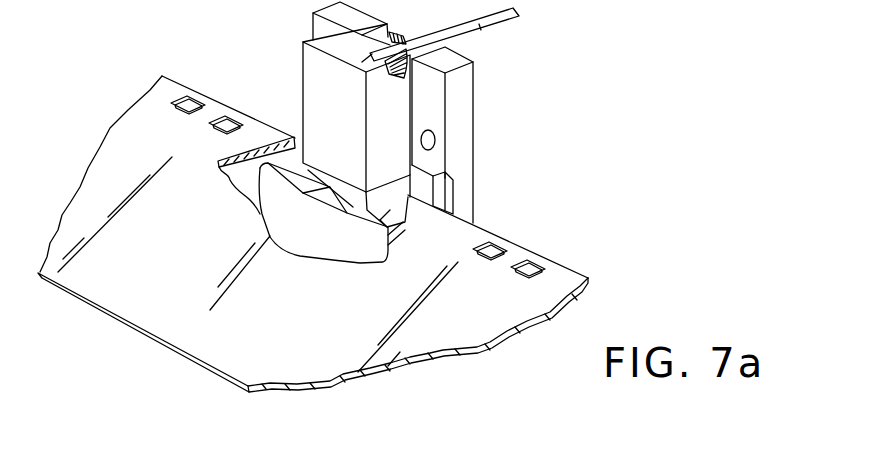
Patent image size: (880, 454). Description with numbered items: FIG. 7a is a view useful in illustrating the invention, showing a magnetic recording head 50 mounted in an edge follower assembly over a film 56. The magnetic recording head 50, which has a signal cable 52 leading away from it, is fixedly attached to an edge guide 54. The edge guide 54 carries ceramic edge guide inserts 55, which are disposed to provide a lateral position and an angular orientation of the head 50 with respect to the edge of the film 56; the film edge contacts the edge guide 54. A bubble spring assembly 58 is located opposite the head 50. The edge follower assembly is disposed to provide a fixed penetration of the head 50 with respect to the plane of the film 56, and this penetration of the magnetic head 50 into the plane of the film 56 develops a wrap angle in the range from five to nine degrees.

The magnetic recording head 50 is at (397, 107).
The signal cable 52 is at (480, 28).
The edge guide 54 is at (473, 160).
The ceramic edge guide inserts 55 is at (447, 196).
The film 56 is at (205, 328).
The bubble spring assembly 58 is at (305, 208).